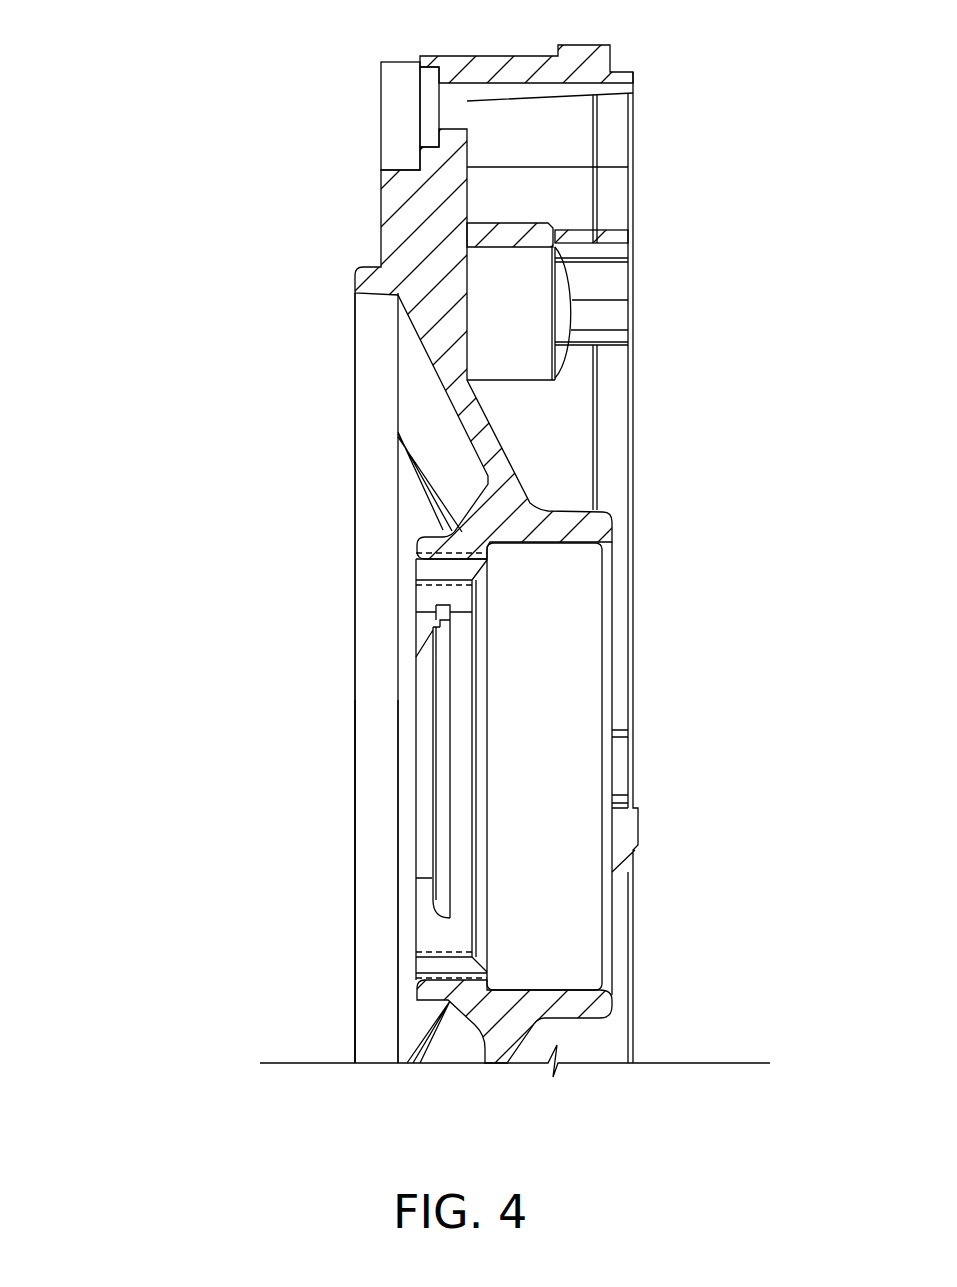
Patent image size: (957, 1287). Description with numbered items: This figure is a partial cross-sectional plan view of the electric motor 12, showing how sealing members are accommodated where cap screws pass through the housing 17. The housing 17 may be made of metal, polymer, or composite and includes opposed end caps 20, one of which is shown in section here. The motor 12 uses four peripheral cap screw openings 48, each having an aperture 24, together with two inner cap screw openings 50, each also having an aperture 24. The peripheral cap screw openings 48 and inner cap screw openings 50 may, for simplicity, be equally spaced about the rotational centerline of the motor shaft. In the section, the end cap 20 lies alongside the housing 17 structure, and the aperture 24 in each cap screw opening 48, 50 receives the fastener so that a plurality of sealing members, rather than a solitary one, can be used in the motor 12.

The motor 12 is at (190, 225).
The housing 17 is at (284, 438).
The end caps 20 is at (355, 857).
The aperture 24 is at (369, 134).
The peripheral cap screw openings 48 is at (366, 77).
The inner cap screw openings 50 is at (341, 576).